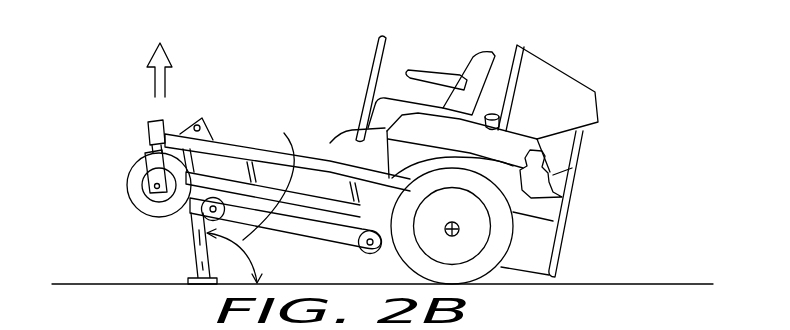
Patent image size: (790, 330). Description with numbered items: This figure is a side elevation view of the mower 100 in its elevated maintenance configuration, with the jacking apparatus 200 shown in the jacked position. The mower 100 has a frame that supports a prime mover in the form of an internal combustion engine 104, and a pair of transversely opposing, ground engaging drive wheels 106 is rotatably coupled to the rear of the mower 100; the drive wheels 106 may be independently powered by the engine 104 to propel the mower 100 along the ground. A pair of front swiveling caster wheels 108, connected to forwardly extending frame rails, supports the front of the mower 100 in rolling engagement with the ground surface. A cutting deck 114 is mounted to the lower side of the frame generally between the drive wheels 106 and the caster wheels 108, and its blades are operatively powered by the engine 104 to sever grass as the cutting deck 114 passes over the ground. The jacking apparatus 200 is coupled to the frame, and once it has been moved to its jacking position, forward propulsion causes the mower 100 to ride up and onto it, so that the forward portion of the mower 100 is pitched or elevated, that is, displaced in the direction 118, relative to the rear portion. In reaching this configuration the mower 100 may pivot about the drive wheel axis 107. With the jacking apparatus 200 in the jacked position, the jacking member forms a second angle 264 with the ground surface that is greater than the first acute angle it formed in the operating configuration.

The mower 100 is at (596, 69).
The internal combustion engine 104 is at (568, 160).
The drive wheels 106 is at (515, 228).
The drive wheel axis 107 is at (456, 232).
The front swiveling caster wheels 108 is at (128, 169).
The cutting deck 114 is at (322, 244).
The direction 118 is at (152, 77).
The jacking apparatus 200 is at (185, 245).
The second angle 264 is at (259, 200).